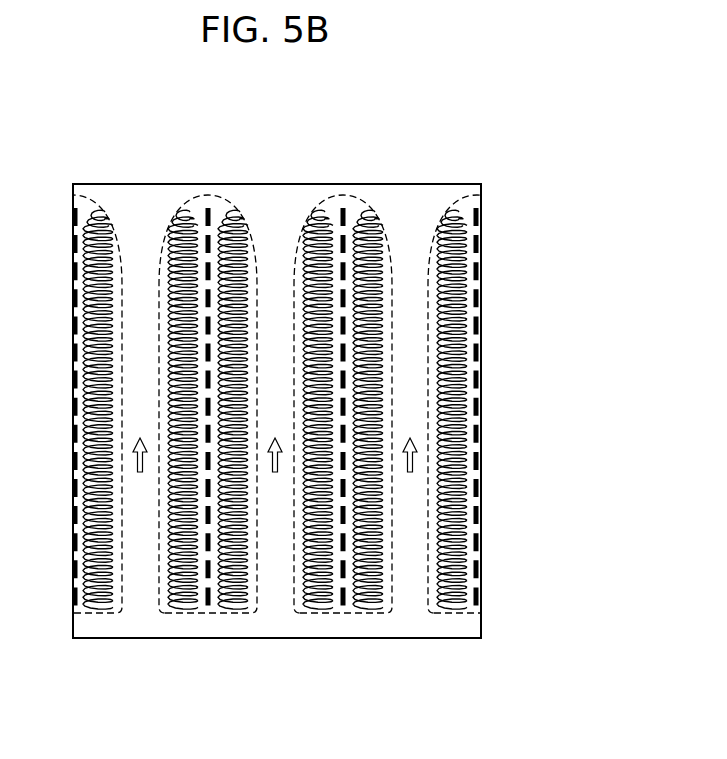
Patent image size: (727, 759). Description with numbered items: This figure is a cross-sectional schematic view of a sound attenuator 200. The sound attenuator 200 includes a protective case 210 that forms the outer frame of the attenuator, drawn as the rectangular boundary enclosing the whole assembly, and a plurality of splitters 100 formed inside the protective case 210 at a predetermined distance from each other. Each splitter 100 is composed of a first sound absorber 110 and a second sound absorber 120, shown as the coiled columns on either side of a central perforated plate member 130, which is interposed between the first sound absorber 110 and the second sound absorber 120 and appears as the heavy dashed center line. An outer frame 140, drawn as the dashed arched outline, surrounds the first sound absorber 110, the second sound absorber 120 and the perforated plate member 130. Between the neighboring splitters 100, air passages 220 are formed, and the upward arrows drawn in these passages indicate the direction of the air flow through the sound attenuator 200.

The splitter 100 is at (436, 404).
The first sound absorber 110 is at (325, 312).
The second sound absorber 120 is at (378, 336).
The perforated plate member 130 is at (350, 377).
The outer frame 140 is at (393, 413).
The sound attenuator 200 is at (287, 174).
The protective case 210 is at (410, 184).
The air passages 220 is at (272, 575).